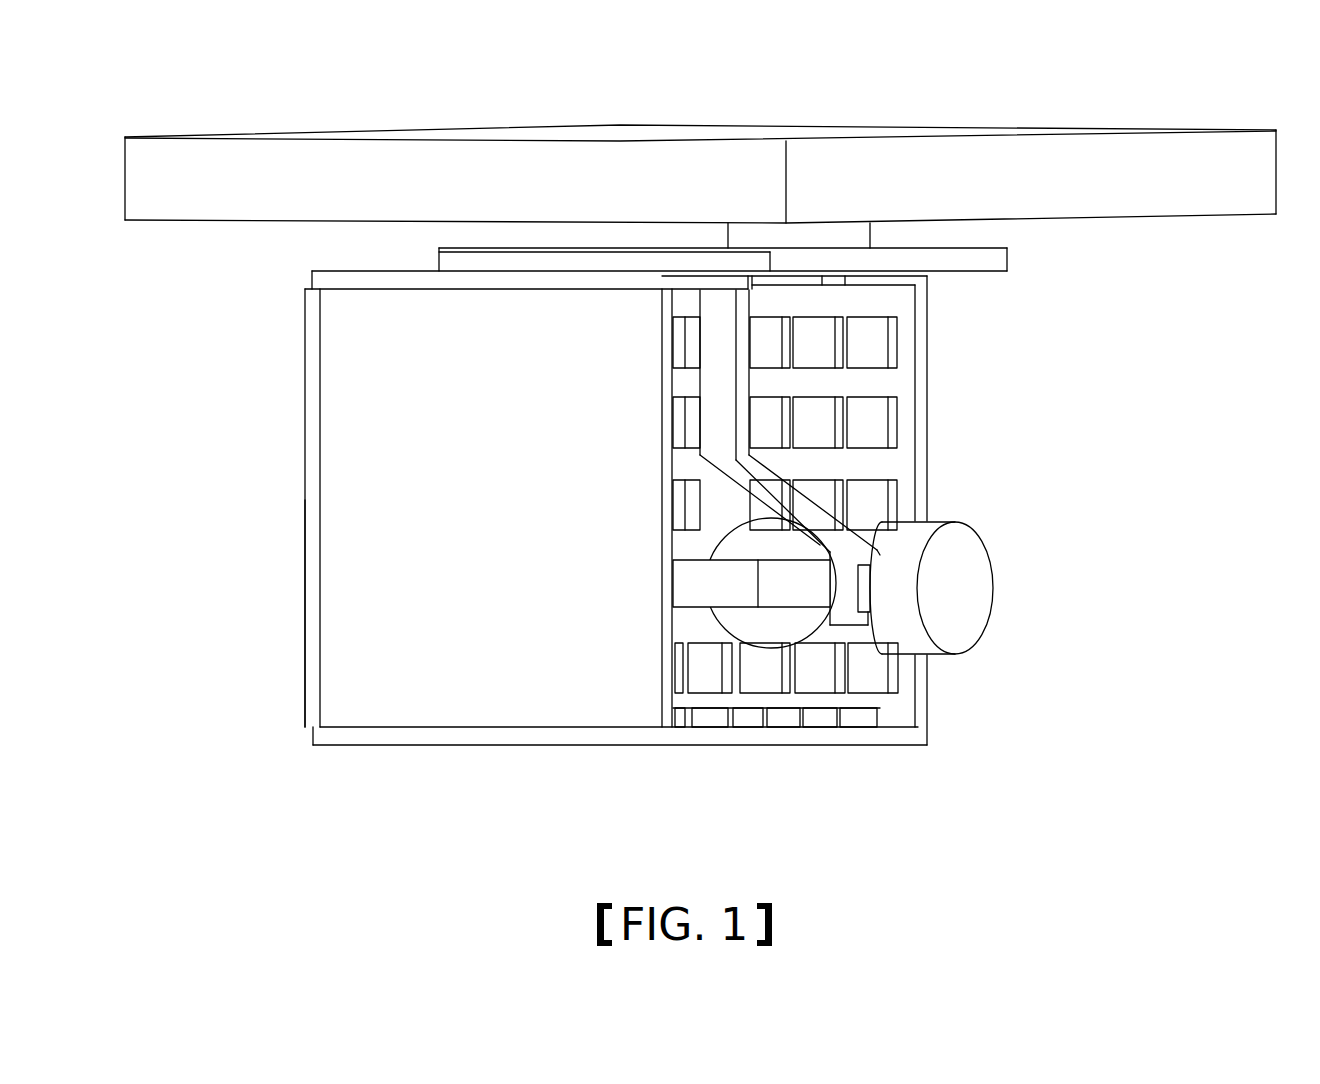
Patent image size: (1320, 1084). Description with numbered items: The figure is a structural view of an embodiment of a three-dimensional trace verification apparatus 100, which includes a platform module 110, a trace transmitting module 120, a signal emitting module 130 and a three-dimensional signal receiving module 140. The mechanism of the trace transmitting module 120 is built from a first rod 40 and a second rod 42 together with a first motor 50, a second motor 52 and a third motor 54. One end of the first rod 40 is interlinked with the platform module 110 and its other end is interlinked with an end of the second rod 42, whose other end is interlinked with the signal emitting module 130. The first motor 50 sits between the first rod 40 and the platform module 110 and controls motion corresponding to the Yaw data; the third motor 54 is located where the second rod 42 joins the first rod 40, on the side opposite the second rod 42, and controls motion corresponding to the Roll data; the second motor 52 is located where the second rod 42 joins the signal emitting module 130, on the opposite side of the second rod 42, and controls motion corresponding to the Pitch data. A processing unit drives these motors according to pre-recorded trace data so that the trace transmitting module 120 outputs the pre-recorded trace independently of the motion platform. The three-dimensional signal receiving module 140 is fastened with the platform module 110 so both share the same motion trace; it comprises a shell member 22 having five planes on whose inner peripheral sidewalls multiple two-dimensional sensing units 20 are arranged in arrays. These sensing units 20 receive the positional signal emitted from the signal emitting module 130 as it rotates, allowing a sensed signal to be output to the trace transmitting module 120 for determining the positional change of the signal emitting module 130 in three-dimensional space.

The three-dimensional trace verification apparatus 100 is at (190, 96).
The platform module 110 is at (1197, 155).
The first motor 50 is at (663, 233).
The trace transmitting module 120 is at (1068, 422).
The three-dimensional signal receiving module 140 is at (252, 506).
The shell member 22 is at (363, 692).
The two-dimensional sensing unit 20 is at (873, 498).
The first rod 40 is at (727, 434).
The second rod 42 is at (815, 578).
The third motor 54 is at (968, 598).
The second motor 52 is at (762, 620).
The signal emitting module 130 is at (698, 583).